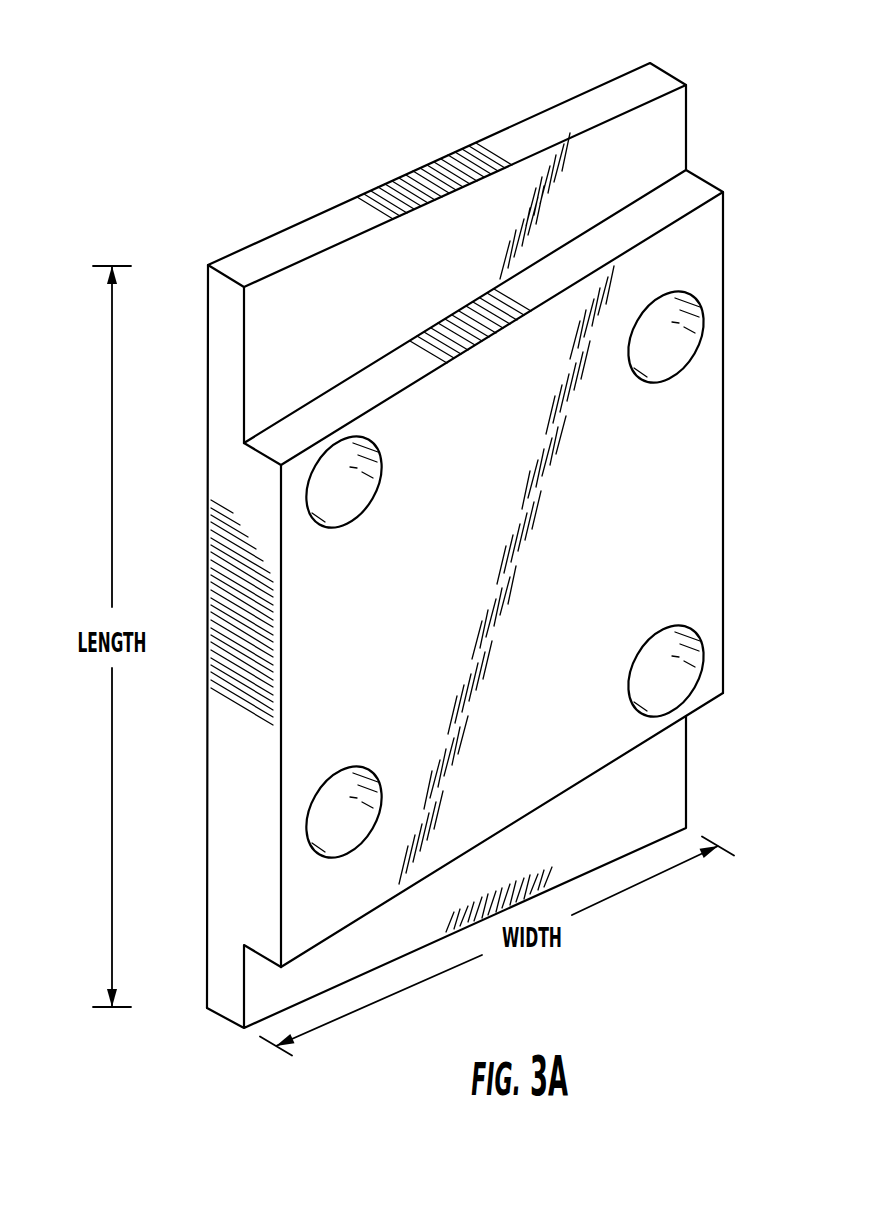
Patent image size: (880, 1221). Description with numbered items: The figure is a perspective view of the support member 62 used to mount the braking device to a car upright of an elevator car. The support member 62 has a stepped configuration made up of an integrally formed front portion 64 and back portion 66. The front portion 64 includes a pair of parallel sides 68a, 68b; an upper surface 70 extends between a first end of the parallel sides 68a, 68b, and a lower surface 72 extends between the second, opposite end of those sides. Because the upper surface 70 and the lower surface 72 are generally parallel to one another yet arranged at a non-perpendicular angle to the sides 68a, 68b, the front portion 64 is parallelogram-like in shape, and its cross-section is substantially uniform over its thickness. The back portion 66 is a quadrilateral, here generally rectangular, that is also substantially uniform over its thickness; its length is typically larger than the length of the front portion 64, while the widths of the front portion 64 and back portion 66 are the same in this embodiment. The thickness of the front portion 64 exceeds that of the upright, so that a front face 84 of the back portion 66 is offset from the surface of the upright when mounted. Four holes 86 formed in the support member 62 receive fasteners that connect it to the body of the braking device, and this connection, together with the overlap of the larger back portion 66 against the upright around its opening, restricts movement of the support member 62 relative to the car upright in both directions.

The support member 62 is at (311, 98).
The front portion 64 is at (672, 467).
The back portion 66 is at (645, 150).
The parallel side 68a is at (723, 557).
The parallel side 68b is at (280, 718).
The upper surface 70 is at (643, 222).
The lower surface 72 is at (638, 745).
The front face 84 is at (313, 297).
The holes 86 is at (682, 347).